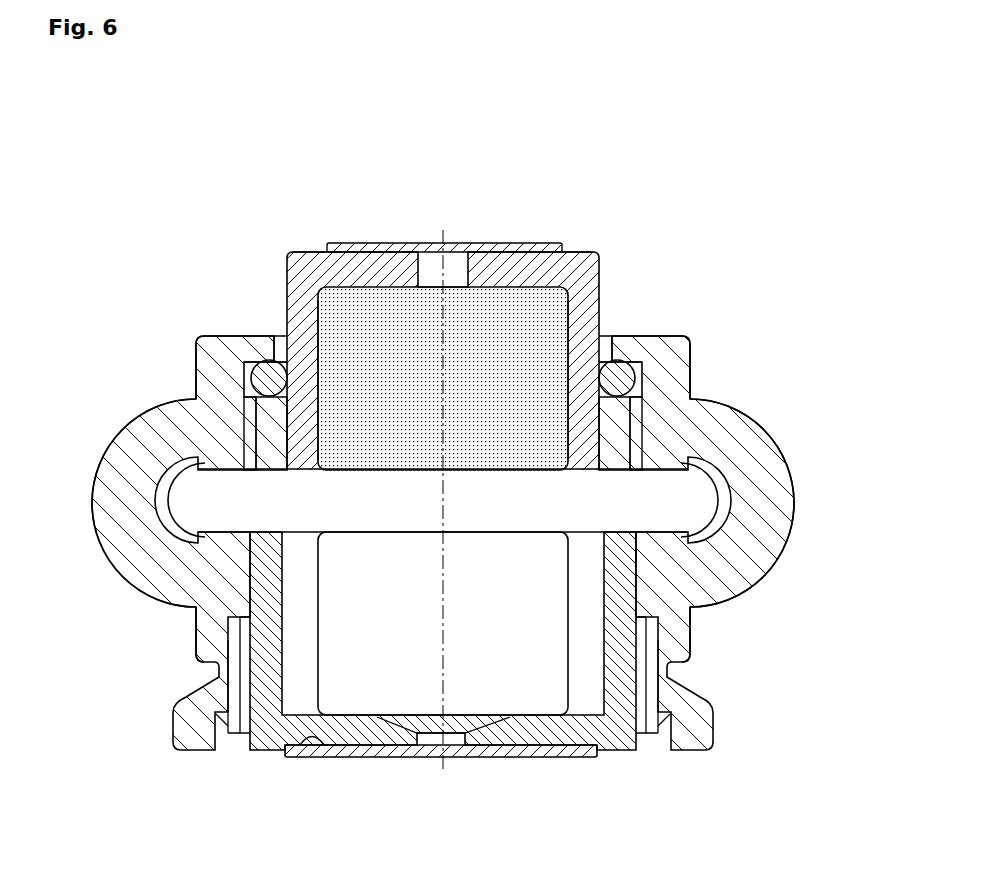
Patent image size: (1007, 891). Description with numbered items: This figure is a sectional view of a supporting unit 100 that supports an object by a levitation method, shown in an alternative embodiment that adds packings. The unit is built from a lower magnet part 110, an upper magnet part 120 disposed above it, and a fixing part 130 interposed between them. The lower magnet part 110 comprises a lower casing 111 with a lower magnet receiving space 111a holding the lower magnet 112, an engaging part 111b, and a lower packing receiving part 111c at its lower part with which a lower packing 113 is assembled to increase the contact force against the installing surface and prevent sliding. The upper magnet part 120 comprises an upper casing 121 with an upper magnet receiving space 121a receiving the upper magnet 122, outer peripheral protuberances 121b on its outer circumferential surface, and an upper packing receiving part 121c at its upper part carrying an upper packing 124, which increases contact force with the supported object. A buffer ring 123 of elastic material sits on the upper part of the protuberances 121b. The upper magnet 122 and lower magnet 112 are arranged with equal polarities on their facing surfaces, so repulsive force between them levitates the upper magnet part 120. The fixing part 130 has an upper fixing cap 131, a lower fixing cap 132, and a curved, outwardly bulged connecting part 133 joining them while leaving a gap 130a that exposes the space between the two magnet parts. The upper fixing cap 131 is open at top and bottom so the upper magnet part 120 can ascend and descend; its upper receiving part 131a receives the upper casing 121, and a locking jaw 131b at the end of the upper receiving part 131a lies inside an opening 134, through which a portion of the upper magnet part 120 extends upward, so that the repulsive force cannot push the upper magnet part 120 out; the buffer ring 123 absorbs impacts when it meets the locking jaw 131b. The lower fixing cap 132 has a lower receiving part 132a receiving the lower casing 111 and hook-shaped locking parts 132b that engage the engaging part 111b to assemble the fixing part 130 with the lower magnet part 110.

The supporting unit 100 is at (238, 160).
The lower magnet part 110 is at (610, 792).
The lower casing 111 is at (268, 752).
The lower magnet receiving space 111a is at (350, 745).
The engaging part 111b is at (237, 750).
The lower packing receiving part 111c is at (323, 753).
The lower magnet 112 is at (525, 688).
The lower packing 113 is at (578, 756).
The upper magnet part 120 is at (576, 237).
The upper casing 121 is at (588, 280).
The upper magnet receiving space 121a is at (305, 312).
The outer peripheral protuberances 121b is at (617, 437).
The upper packing receiving part 121c is at (545, 245).
The upper magnet 122 is at (366, 332).
The buffer ring 123 is at (620, 378).
The upper packing 124 is at (420, 248).
The fixing part 130 is at (806, 425).
The gap 130a is at (470, 495).
The upper fixing cap 131 is at (215, 378).
The upper receiving part 131a is at (245, 440).
The locking jaw 131b is at (263, 345).
The lower fixing cap 132 is at (207, 622).
The lower receiving part 132a is at (250, 600).
The locking parts 132b is at (225, 700).
The connecting part 133 is at (115, 457).
The opening 134 is at (605, 347).